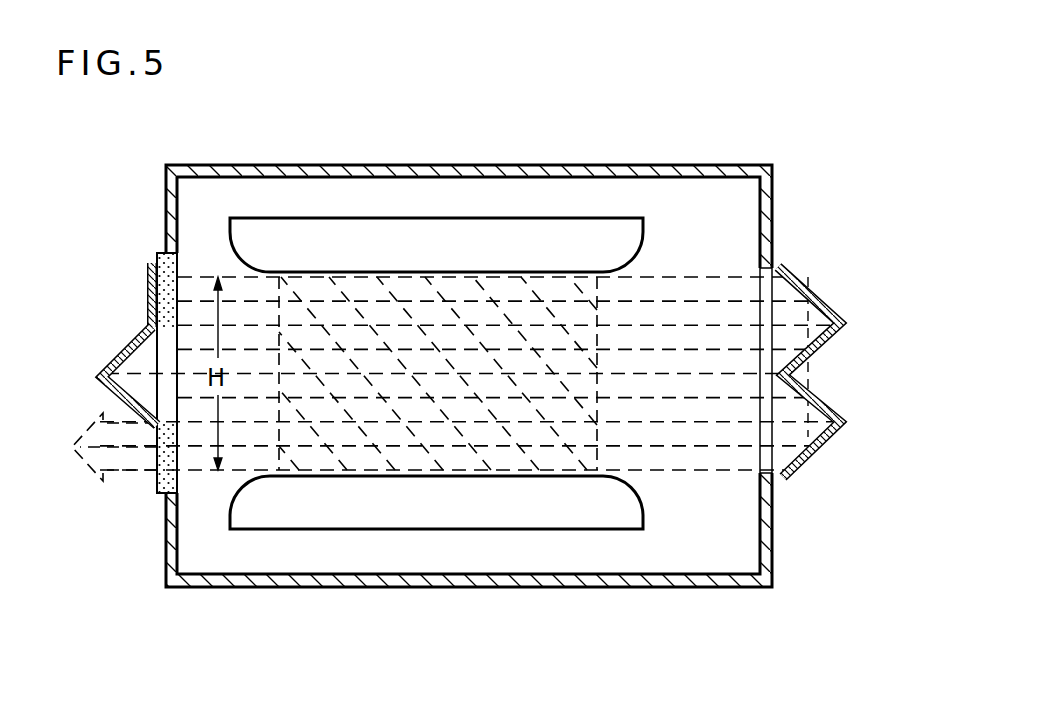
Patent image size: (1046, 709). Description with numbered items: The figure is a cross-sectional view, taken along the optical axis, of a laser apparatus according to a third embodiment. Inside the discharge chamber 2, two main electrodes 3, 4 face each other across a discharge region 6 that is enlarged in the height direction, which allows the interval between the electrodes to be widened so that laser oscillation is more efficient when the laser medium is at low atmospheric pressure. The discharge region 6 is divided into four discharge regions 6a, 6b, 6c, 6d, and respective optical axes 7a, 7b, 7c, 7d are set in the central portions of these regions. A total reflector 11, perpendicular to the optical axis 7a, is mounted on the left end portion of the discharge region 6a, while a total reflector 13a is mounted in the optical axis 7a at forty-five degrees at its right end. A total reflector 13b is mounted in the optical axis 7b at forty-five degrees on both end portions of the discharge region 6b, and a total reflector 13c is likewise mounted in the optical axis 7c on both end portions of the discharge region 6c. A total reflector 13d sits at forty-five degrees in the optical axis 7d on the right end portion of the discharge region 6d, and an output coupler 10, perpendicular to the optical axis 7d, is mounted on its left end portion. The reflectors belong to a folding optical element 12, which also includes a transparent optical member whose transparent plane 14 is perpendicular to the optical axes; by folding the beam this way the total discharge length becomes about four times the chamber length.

The discharge chamber 2 is at (285, 175).
The main electrode 3 is at (430, 232).
The main electrode 4 is at (393, 514).
The discharge region 6 is at (570, 285).
The discharge region 6a is at (480, 286).
The discharge region 6b is at (521, 313).
The discharge region 6c is at (522, 413).
The discharge region 6d is at (443, 455).
The optical axis 7a is at (664, 298).
The optical axis 7b is at (700, 353).
The optical axis 7c is at (699, 398).
The optical axis 7d is at (654, 448).
The output coupler 10 is at (157, 487).
The total reflector 11 is at (150, 266).
The folding optical element 12 is at (152, 368).
The total reflector 13a is at (812, 297).
The total reflector 13b is at (148, 332).
The total reflector 13c is at (107, 403).
The total reflector 13d is at (820, 447).
The transparent plane 14 is at (172, 392).